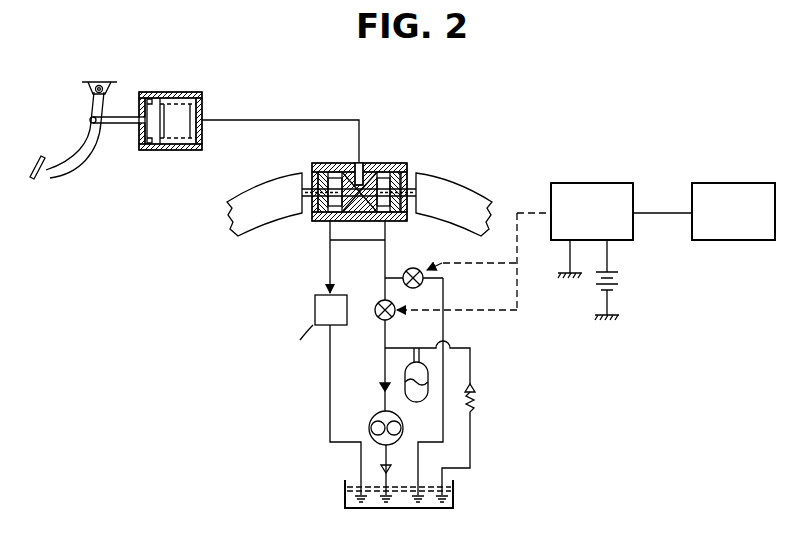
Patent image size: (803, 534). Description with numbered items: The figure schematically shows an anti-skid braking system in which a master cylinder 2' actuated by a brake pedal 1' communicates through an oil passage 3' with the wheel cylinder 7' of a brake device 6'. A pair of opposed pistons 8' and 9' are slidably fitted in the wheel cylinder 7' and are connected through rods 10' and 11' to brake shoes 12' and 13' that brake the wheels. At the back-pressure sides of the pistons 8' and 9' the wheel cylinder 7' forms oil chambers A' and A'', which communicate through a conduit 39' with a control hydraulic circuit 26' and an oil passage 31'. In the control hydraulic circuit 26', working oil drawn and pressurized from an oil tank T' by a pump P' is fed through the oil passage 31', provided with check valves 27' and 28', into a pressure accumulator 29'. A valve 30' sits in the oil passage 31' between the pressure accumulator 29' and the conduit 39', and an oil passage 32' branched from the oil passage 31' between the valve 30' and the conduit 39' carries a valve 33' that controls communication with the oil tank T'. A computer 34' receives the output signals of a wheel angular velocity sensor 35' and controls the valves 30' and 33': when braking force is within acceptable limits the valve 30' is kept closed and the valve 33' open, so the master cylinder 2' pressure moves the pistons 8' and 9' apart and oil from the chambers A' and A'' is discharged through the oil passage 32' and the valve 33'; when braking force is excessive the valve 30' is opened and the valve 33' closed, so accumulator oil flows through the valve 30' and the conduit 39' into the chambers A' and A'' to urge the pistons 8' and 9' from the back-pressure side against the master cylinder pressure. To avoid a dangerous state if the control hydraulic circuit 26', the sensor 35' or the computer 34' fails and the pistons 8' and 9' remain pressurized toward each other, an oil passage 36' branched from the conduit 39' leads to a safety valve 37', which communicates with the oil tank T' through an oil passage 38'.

The brake pedal 1' is at (73, 130).
The master cylinder 2' is at (170, 100).
The oil passage 3' is at (280, 129).
The brake device 6' is at (360, 172).
The wheel cylinder 7' is at (351, 208).
The piston 8' is at (340, 172).
The piston 9' is at (386, 172).
The rod 10' is at (317, 168).
The rod 11' is at (409, 166).
The brake shoe 12' is at (264, 220).
The brake shoe 13' is at (454, 220).
The control hydraulic circuit 26' is at (456, 411).
The check valve 27' is at (357, 470).
The check valve 28' is at (368, 365).
The pressure accumulator 29' is at (422, 362).
The valve 30' is at (371, 298).
The oil passage 31' is at (383, 260).
The oil passage 32' is at (414, 262).
The valve 33' is at (432, 386).
The computer 34' is at (523, 227).
The wheel angular velocity sensor 35' is at (704, 187).
The oil passage 36' is at (310, 257).
The safety valve 37' is at (302, 334).
The oil passage 38' is at (323, 410).
The conduit 39' is at (357, 256).
The oil chamber A' is at (330, 169).
The oil chamber A'' is at (401, 169).
The pump P' is at (404, 424).
The oil tank T' is at (379, 495).